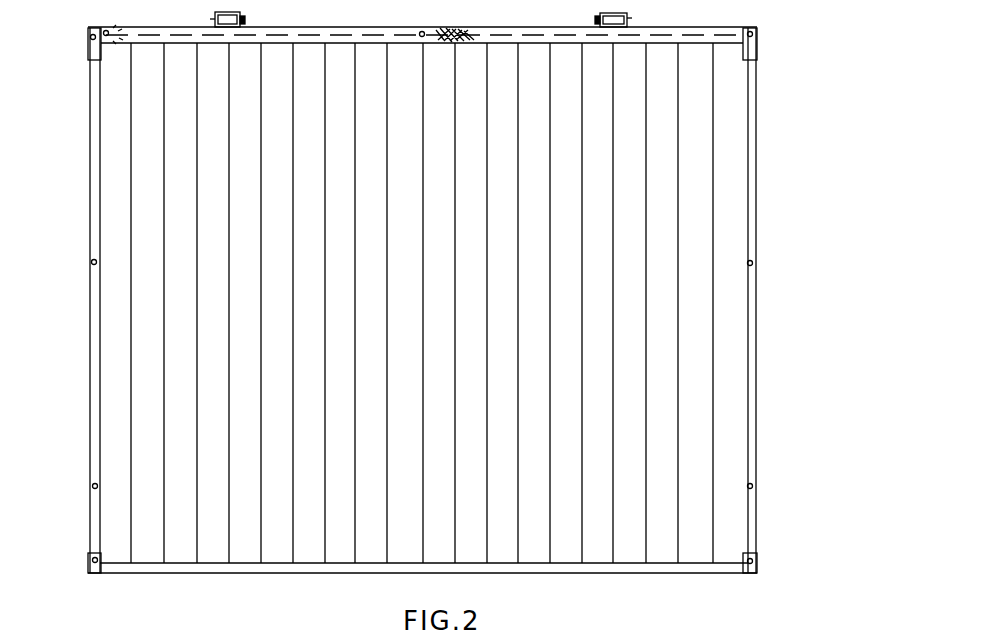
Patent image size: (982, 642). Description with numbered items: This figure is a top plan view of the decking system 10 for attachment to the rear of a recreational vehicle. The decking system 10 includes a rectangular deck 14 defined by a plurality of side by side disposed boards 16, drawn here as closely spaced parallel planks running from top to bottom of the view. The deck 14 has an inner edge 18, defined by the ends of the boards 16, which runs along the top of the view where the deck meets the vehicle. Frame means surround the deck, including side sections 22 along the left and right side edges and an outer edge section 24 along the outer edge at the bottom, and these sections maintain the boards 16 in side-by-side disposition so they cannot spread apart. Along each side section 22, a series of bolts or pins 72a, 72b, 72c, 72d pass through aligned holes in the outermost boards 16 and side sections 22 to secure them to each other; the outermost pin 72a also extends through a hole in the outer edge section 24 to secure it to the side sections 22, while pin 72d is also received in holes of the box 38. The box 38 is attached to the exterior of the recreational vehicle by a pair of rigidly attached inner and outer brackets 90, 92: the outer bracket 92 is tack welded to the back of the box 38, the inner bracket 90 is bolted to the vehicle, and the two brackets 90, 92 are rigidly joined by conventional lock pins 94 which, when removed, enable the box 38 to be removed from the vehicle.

The decking system 10 is at (772, 184).
The rectangular deck 14 is at (758, 319).
The boards 16 is at (172, 236).
The inner edge 18 is at (512, 37).
The side sections 22 is at (90, 336).
The outer edge section 24 is at (208, 566).
The box 38 is at (757, 48).
The pin 72a is at (92, 560).
The pin 72b is at (92, 486).
The pin 72c is at (91, 262).
The pin 72d is at (91, 36).
The inner bracket 90 is at (238, 13).
The outer bracket 92 is at (246, 22).
The lock pins 94 is at (215, 19).